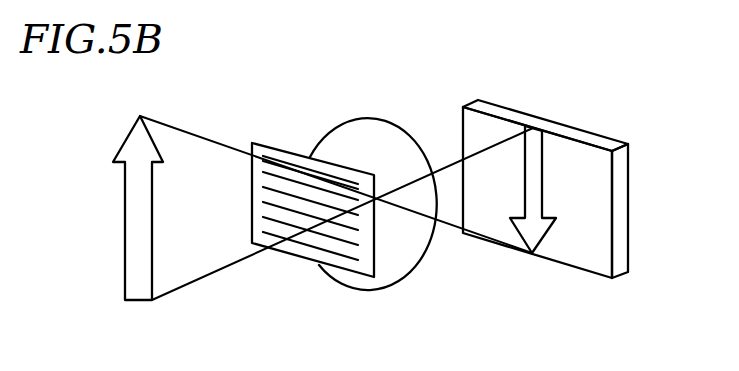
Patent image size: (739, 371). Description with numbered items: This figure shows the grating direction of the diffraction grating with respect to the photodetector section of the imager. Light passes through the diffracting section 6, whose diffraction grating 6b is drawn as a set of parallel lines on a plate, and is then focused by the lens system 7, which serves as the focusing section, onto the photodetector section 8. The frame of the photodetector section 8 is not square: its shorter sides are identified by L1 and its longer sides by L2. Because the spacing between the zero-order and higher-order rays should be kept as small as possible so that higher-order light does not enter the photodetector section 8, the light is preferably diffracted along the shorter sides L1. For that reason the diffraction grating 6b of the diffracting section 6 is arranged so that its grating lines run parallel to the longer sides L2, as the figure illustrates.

The diffracting section 6 is at (303, 190).
The diffraction grating 6b is at (313, 247).
The lens system 7 is at (377, 127).
The photodetector section 8 is at (514, 117).
The shorter sides of the photodetector section L1 is at (618, 217).
The longer sides of the photodetector section L2 is at (548, 262).